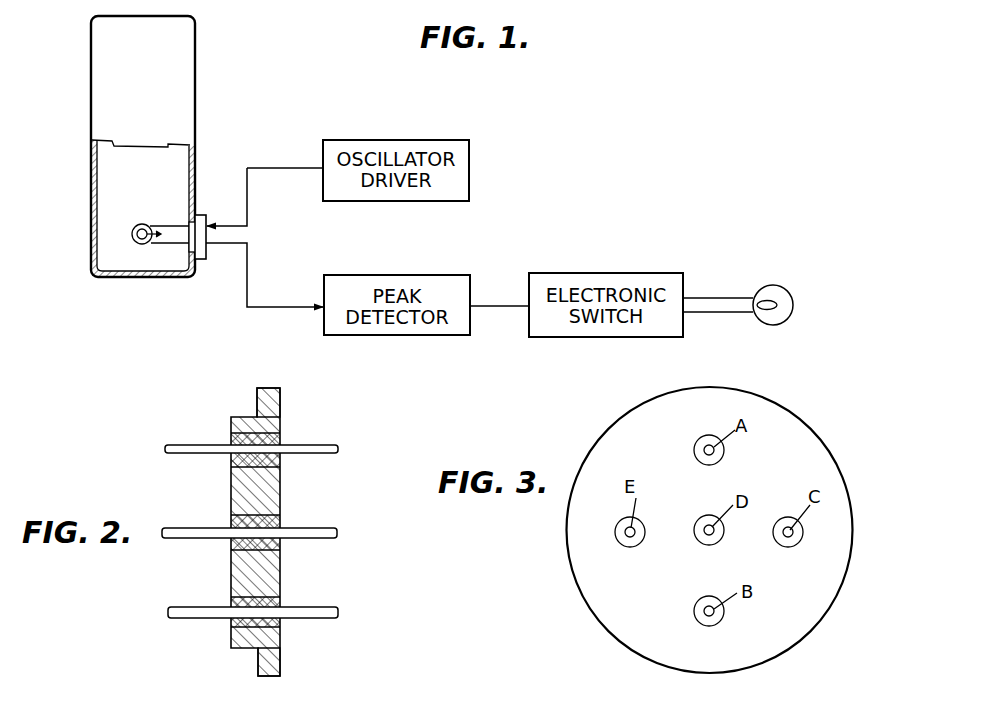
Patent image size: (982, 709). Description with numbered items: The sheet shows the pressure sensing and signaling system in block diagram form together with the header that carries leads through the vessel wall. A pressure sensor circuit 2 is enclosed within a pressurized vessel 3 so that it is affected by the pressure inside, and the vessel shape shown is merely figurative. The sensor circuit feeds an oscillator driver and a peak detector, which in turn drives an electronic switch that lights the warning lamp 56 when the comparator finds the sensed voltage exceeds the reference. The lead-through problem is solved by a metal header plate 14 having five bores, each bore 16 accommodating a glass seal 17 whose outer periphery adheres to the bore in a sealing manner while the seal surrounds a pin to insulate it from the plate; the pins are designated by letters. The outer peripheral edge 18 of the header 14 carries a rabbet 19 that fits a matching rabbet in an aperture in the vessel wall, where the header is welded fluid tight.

In FIG. 1, the pressure sensor circuit 2 is at (137, 229).
In FIG. 1, the pressurized vessel 3 is at (195, 93).
In FIG. 2, the pressurized vessel 3 is at (352, 531).
In FIG. 2, the header plate 14 is at (276, 505).
In FIG. 3, the header plate 14 is at (818, 455).
In FIG. 2, the bore 16 is at (240, 457).
In FIG. 3, the bore 16 is at (716, 457).
In FIG. 2, the glass seal 17 is at (248, 548).
In FIG. 3, the glass seal 17 is at (712, 540).
In FIG. 2, the outer peripheral edge 18 is at (268, 677).
In FIG. 2, the rabbet 19 is at (257, 401).
In FIG. 1, the warning lamp 56 is at (782, 287).